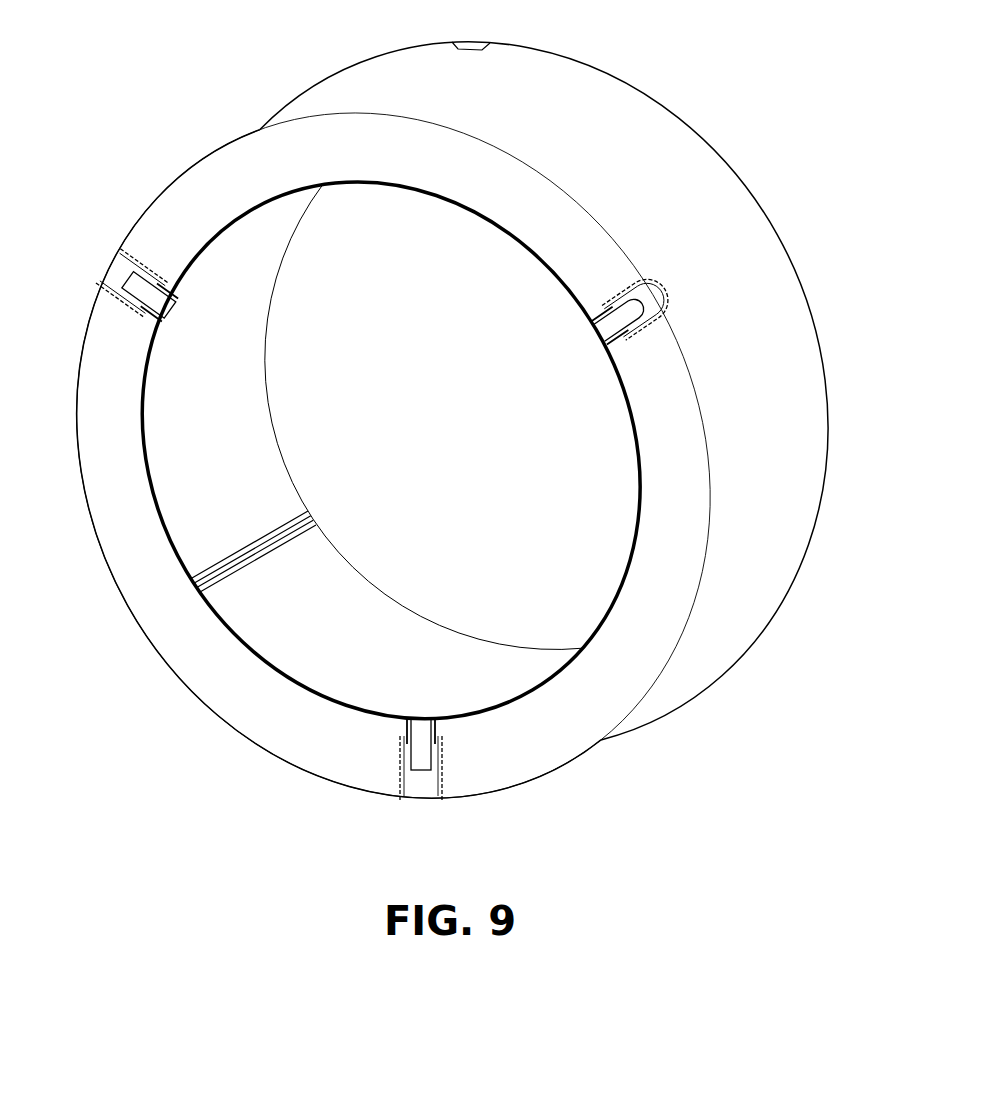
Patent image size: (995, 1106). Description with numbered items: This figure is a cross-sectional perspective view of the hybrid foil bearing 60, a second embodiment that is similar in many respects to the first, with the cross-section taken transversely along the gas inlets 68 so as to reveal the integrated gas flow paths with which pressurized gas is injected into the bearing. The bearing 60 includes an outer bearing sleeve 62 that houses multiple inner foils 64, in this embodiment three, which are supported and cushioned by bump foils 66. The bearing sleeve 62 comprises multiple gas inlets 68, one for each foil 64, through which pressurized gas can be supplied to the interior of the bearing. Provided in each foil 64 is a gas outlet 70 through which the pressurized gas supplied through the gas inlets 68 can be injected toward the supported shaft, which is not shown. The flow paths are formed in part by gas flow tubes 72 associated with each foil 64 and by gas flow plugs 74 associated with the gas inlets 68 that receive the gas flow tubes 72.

The hybrid foil bearing 60 is at (822, 118).
The outer bearing sleeve 62 is at (822, 260).
The inner foil 64 is at (282, 468).
The bump foil 66 is at (442, 200).
The gas inlet 68 is at (89, 250).
The gas outlet 70 is at (165, 312).
The gas flow tube 72 is at (168, 298).
The gas flow plug 74 is at (113, 292).